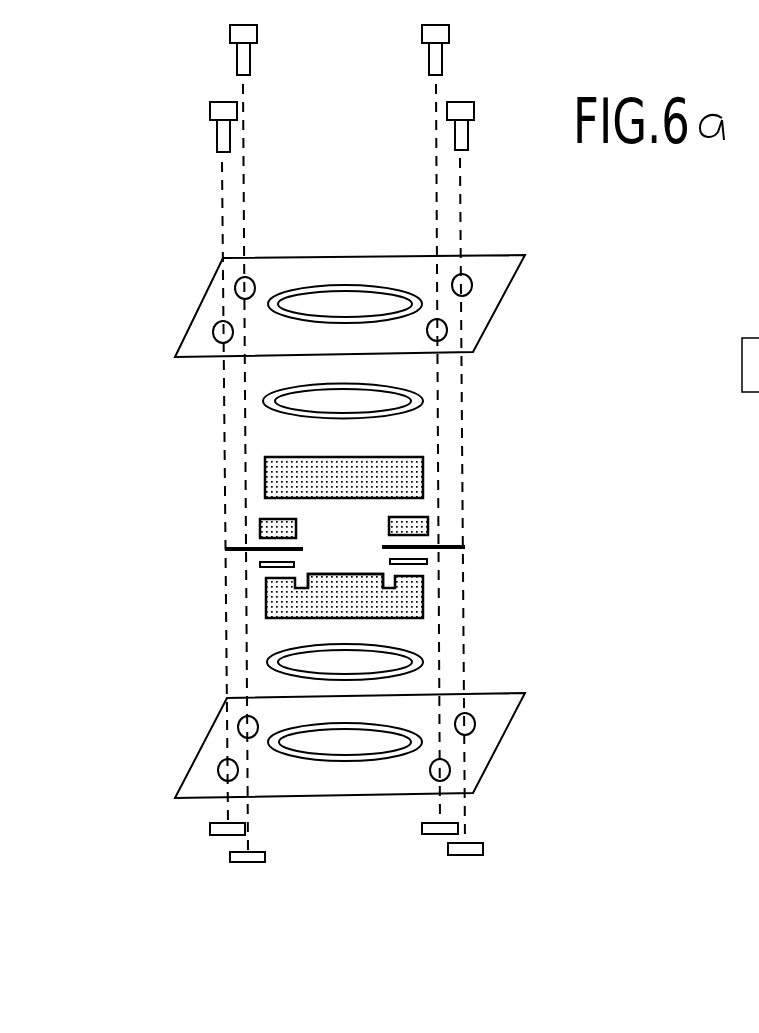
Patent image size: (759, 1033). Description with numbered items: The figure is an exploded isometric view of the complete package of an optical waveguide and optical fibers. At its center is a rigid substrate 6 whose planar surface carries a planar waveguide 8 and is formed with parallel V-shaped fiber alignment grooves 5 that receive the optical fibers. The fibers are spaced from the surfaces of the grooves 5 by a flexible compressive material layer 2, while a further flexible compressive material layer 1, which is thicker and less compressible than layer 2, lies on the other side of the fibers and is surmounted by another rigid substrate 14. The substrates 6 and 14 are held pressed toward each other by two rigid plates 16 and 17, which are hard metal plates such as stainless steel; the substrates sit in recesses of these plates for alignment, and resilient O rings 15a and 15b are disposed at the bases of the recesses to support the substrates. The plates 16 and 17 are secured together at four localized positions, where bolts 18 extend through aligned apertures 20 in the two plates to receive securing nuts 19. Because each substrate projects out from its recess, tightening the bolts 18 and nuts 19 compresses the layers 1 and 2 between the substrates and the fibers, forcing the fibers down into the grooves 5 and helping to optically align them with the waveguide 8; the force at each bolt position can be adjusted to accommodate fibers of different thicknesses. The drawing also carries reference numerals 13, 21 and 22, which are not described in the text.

The flexible compressive material layer 1 is at (428, 527).
The flexible compressive material layer 2 is at (257, 565).
The fiber alignment grooves 5 is at (423, 581).
The rigid substrate 6 is at (266, 602).
The planar waveguide 8 is at (343, 567).
The conductor strip 13 is at (473, 546).
The rigid substrate 14 is at (423, 470).
The O ring 15a is at (432, 660).
The O ring 15b is at (430, 398).
The rigid plate 16 is at (263, 307).
The rigid plate 17 is at (497, 732).
The bolts 18 is at (212, 133).
The securing nuts 19 is at (203, 830).
The apertures 20 is at (465, 283).
The bottom plate window 21 is at (258, 752).
The top plate window 22 is at (272, 273).